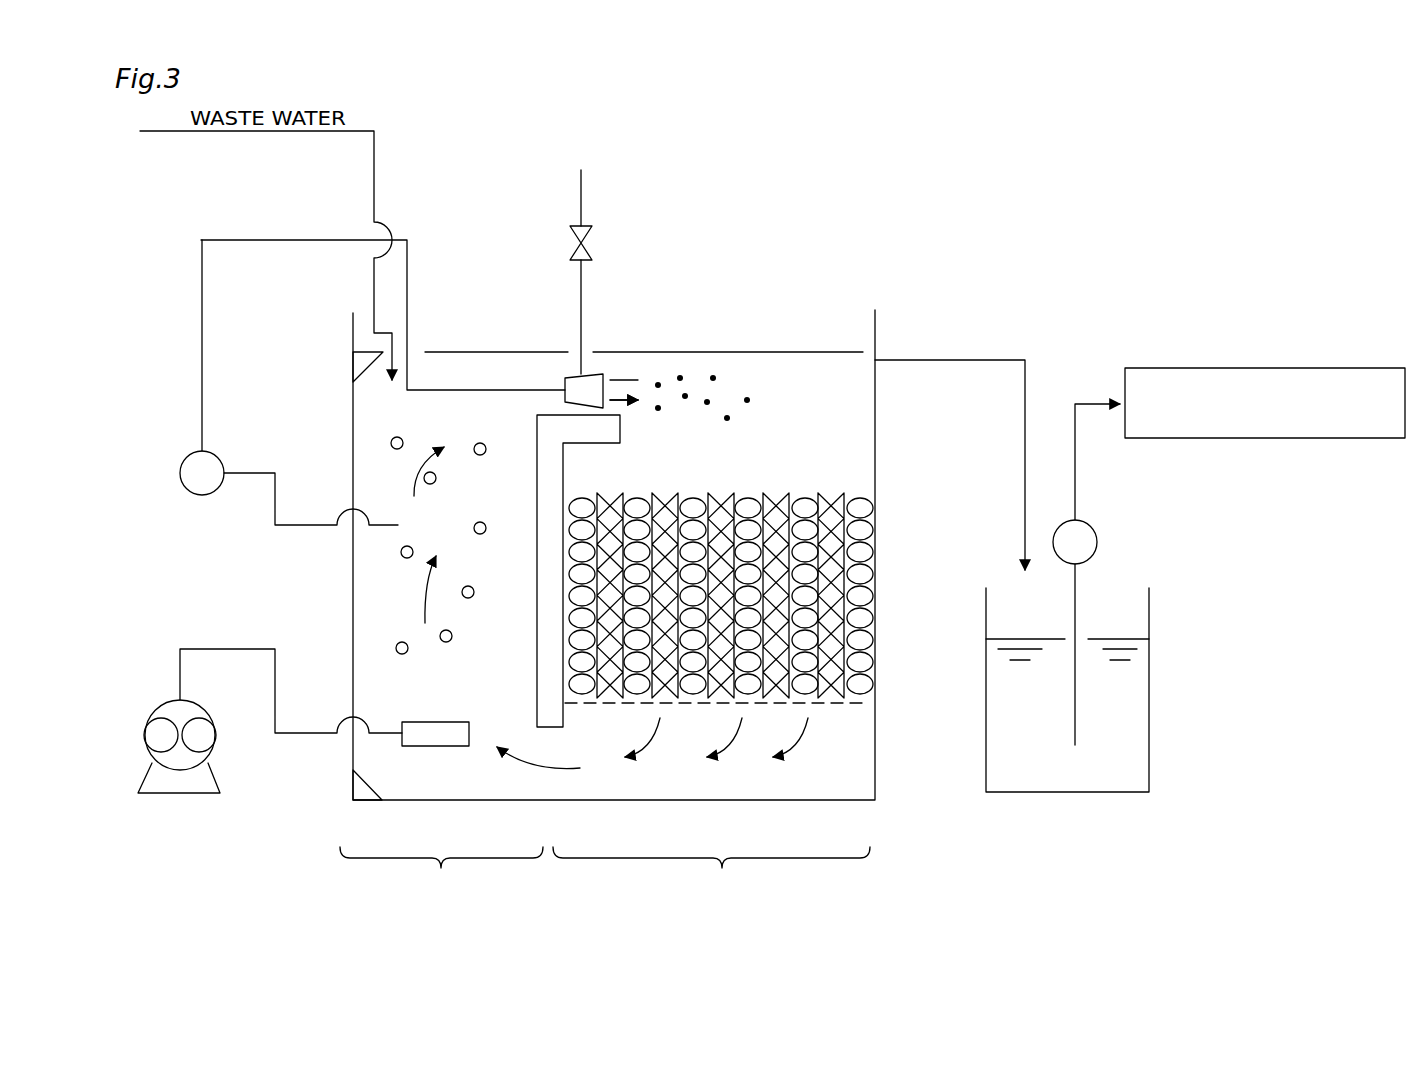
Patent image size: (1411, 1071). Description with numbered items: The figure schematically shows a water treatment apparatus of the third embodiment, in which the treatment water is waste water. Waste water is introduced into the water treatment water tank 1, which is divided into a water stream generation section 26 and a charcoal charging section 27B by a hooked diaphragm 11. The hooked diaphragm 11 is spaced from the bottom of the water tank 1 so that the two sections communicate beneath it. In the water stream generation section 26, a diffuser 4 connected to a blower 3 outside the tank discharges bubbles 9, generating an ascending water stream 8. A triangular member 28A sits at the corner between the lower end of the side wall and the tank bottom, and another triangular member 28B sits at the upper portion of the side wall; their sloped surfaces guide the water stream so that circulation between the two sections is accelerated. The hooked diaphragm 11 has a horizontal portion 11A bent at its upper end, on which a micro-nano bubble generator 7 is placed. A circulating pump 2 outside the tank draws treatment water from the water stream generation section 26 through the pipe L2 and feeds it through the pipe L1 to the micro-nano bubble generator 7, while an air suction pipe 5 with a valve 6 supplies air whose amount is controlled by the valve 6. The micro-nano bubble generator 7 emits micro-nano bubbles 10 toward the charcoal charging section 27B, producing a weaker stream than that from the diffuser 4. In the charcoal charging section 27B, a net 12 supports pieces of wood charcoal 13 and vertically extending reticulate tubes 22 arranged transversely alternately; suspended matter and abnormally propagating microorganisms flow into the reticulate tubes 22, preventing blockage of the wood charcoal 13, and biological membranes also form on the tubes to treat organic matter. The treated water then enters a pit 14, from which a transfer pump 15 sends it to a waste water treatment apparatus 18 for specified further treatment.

The water treatment water tank 1 is at (348, 680).
The circulating pump 2 is at (202, 495).
The blower 3 is at (163, 706).
The diffuser 4 is at (440, 746).
The air suction pipe 5 is at (582, 190).
The valve 6 is at (588, 250).
The micro-nano bubble generator 7 is at (592, 376).
The water stream 8 is at (414, 482).
The bubbles 9 is at (401, 551).
The micro-nano bubbles 10 is at (714, 377).
The hooked diaphragm 11 is at (537, 440).
The horizontal portion 11A is at (598, 443).
The net 12 is at (853, 703).
The wood charcoal 13 is at (748, 500).
The pit 14 is at (1156, 670).
The transfer pump 15 is at (1098, 542).
The waste water treatment apparatus 18 is at (1168, 367).
The reticulate tubes 22 is at (790, 493).
The water stream generation section 26 is at (441, 877).
The charcoal charging section 27B is at (711, 877).
The triangular member 28A is at (353, 795).
The triangular member 28B is at (355, 362).
The pipe L1 is at (243, 240).
The pipe L2 is at (248, 480).